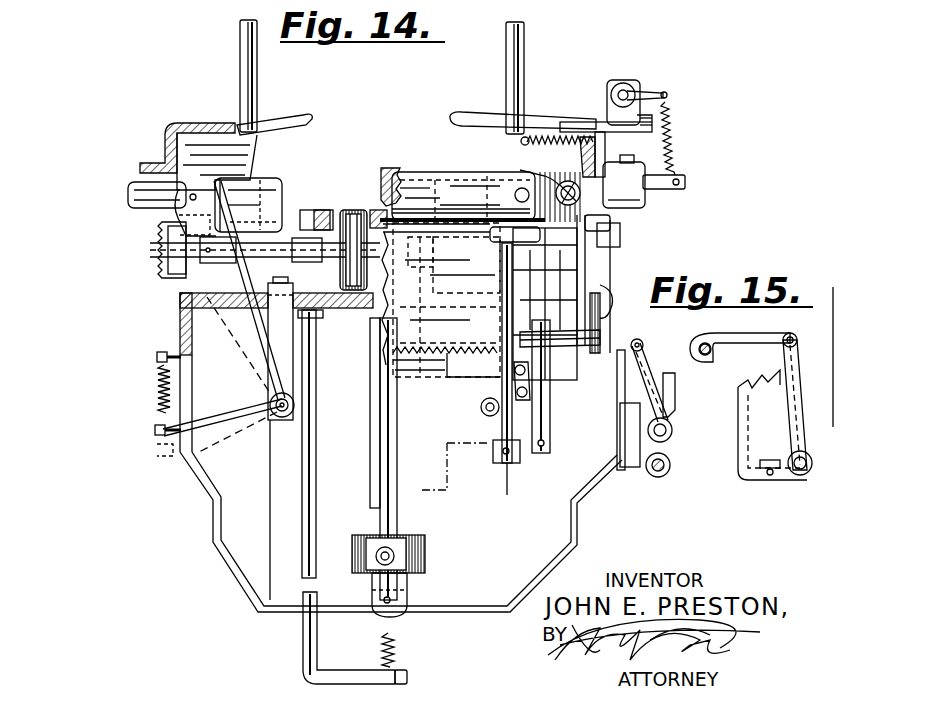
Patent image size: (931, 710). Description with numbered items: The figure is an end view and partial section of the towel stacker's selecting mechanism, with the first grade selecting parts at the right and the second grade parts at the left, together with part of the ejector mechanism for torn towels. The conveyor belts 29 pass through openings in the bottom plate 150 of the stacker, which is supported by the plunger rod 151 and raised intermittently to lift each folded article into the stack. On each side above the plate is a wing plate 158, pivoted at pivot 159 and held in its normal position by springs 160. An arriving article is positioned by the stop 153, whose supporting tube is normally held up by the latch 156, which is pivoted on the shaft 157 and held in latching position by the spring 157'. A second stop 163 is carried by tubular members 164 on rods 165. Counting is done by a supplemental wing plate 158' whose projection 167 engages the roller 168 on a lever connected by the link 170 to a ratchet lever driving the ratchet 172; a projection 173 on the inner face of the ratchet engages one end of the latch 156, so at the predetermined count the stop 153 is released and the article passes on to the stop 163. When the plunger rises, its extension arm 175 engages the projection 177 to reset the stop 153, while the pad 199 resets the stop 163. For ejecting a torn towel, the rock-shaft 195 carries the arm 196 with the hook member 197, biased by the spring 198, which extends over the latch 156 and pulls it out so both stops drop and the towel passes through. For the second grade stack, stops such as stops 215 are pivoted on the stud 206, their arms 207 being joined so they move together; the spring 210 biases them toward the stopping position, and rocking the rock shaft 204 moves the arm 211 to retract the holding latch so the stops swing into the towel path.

In FIG. 14, the belts 29 is at (353, 208).
In FIG. 14, the plate 150 is at (325, 212).
In FIG. 14, the plunger rod 151 is at (400, 520).
In FIG. 14, the stop 153 is at (393, 182).
In FIG. 14, the latch 156 is at (530, 365).
In FIG. 15, the latch 156 is at (711, 354).
In FIG. 14, the shaft 157 is at (555, 383).
In FIG. 14, the spring 157' is at (454, 421).
In FIG. 14, the wing plate 158 is at (396, 132).
In FIG. 14, the supplemental wing plate 158' is at (620, 154).
In FIG. 14, the pivot 159 is at (172, 205).
In FIG. 14, the springs 160 is at (552, 132).
In FIG. 14, the second stop 163 is at (432, 180).
In FIG. 14, the tubular members 164 is at (505, 325).
In FIG. 14, the rods 165 is at (498, 438).
In FIG. 14, the projection 167 is at (640, 200).
In FIG. 14, the roller 168 is at (612, 246).
In FIG. 14, the link 170 is at (601, 279).
In FIG. 14, the ratchet 172 is at (643, 347).
In FIG. 14, the projection 173 is at (570, 352).
In FIG. 14, the extension arm 175 is at (380, 560).
In FIG. 14, the projection 177 is at (373, 400).
In FIG. 14, the rock-shaft 195 is at (663, 476).
In FIG. 15, the rock-shaft 195 is at (800, 476).
In FIG. 15, the arm 196 is at (803, 378).
In FIG. 15, the hook member 197 is at (722, 340).
In FIG. 15, the spring 198 is at (805, 410).
In FIG. 14, the pad 199 is at (415, 560).
In FIG. 14, the rock shaft 204 is at (667, 430).
In FIG. 14, the stud 206 is at (280, 420).
In FIG. 14, the arms 207 is at (343, 412).
In FIG. 14, the spring 210 is at (158, 396).
In FIG. 14, the arm 211 is at (643, 380).
In FIG. 14, the stops 215 is at (268, 185).